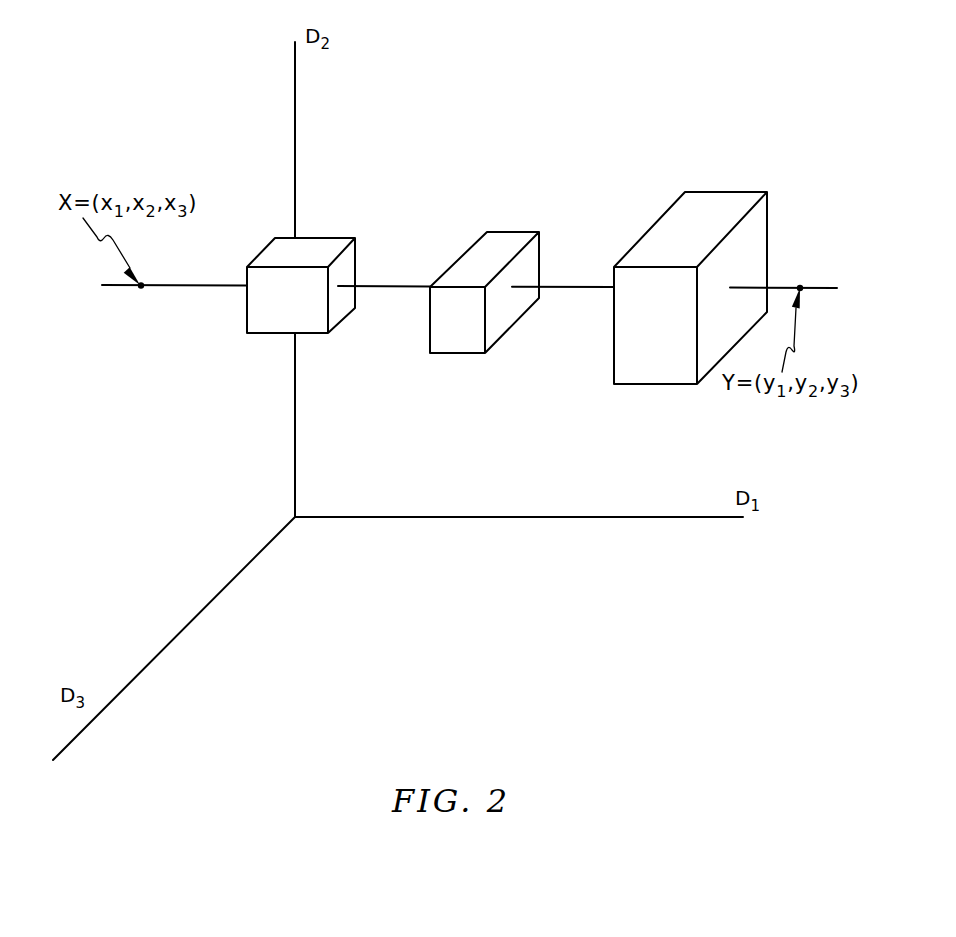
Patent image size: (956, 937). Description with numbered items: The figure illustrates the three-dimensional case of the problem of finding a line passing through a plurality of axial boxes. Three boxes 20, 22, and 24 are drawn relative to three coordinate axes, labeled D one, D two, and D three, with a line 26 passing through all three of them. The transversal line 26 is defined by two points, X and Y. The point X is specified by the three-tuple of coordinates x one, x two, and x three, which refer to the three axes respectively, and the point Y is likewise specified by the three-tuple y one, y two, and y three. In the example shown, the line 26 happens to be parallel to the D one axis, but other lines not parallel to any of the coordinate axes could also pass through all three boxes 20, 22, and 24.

The box 20 is at (313, 250).
The box 22 is at (508, 242).
The box 24 is at (655, 237).
The line 26 is at (400, 285).